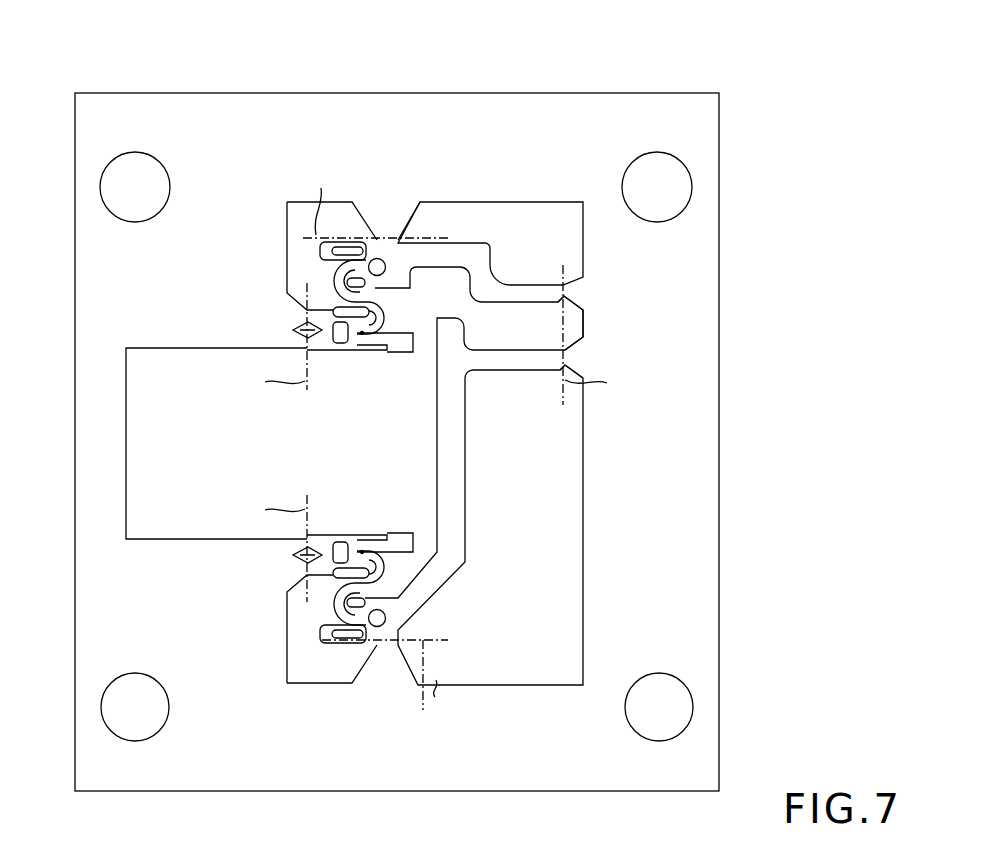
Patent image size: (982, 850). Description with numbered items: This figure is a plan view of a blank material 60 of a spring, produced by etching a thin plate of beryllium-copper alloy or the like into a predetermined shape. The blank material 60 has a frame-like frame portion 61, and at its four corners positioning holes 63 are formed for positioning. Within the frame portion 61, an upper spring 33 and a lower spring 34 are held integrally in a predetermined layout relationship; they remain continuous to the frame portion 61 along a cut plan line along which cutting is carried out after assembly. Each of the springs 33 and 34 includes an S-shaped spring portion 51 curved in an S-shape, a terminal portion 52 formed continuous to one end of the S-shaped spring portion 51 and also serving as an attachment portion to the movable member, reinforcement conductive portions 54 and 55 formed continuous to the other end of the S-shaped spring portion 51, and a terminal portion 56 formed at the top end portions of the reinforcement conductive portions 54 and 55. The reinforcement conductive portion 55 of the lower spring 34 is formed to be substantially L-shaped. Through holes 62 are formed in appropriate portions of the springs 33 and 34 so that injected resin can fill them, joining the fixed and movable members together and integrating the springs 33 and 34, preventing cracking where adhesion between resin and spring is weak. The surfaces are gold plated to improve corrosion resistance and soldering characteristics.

The blank material 60 is at (397, 398).
The frame portion 61 is at (289, 105).
The through holes 62 is at (363, 278).
The positioning holes 63 is at (150, 184).
The spring 33 is at (466, 228).
The spring 34 is at (432, 612).
The S-shaped spring portion 51 is at (330, 287).
The terminal portion 52 is at (336, 352).
The reinforcement conductive portion 54 is at (438, 245).
The reinforcement conductive portion 55 is at (463, 545).
The terminal portion 56 is at (536, 292).